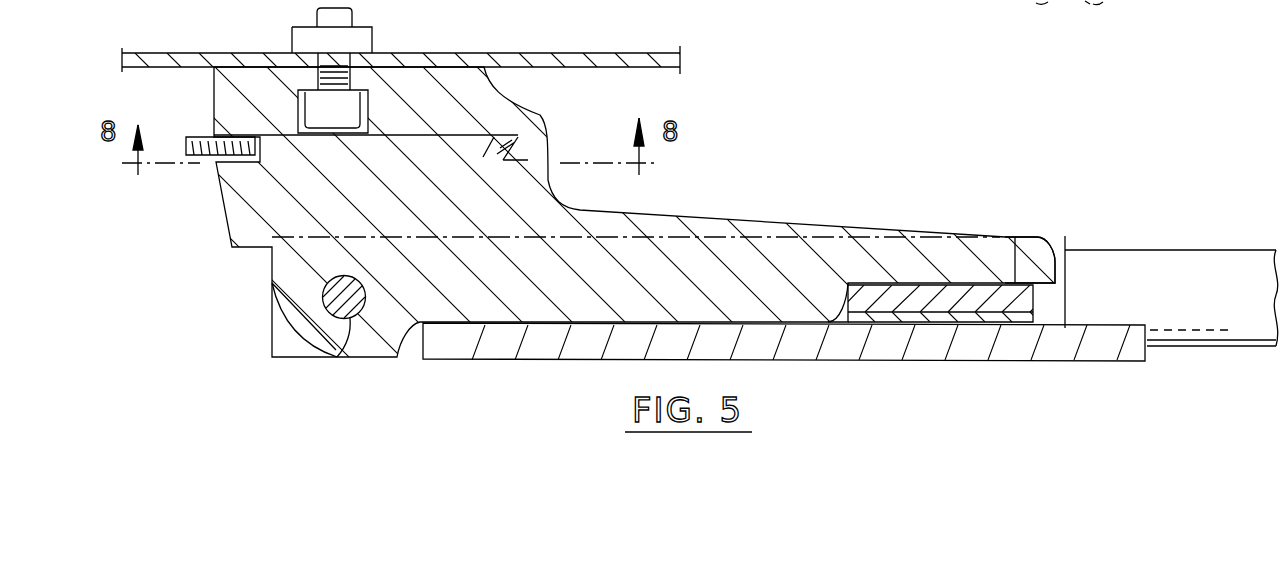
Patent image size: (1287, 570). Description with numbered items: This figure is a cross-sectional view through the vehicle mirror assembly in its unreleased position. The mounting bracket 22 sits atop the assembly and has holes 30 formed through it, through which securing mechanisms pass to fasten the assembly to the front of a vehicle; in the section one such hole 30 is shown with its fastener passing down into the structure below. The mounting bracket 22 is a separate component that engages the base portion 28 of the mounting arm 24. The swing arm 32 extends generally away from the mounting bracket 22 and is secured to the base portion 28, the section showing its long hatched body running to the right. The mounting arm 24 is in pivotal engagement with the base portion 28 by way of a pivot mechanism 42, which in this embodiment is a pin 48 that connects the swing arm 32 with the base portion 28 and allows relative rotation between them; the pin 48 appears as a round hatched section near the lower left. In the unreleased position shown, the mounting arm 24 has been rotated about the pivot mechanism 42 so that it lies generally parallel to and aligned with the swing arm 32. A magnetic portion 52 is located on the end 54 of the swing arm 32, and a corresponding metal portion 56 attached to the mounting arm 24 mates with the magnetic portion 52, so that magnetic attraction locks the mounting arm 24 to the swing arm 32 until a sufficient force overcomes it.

The mounting bracket 22 is at (460, 80).
The mounting arm 24 is at (1162, 257).
The base portion 28 is at (522, 135).
The holes 30 is at (358, 88).
The swing arm 32 is at (768, 237).
The pivot mechanism 42 is at (322, 293).
The pin 48 is at (340, 356).
The magnetic portion 52 is at (1013, 258).
The end of the swing arm 54 is at (1062, 252).
The metal portion 56 is at (1013, 330).